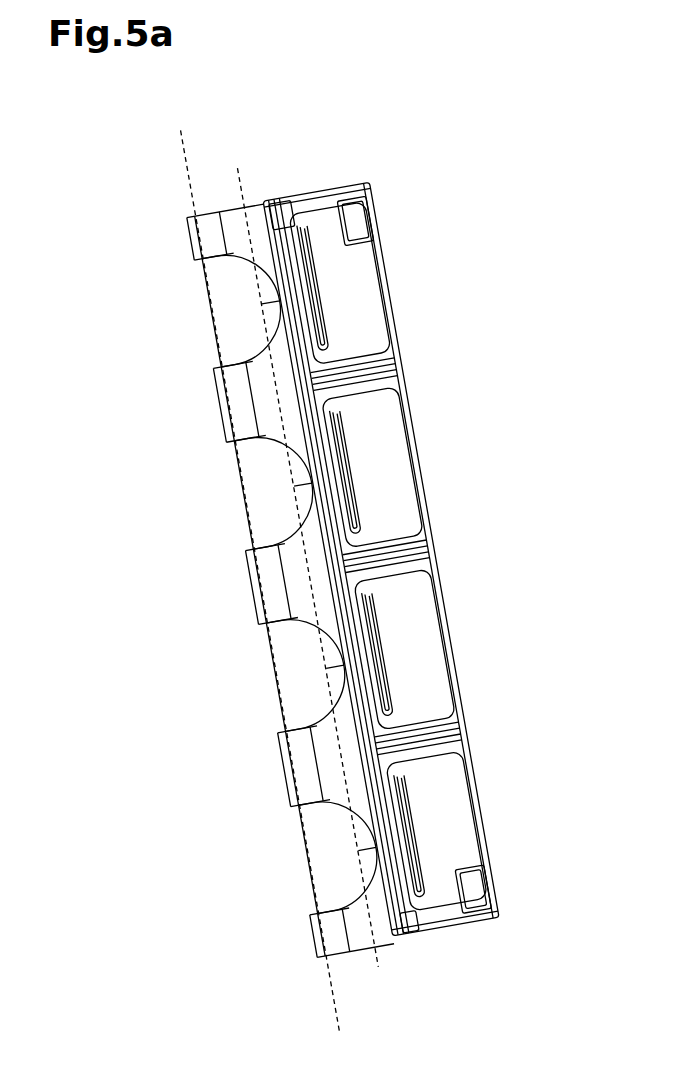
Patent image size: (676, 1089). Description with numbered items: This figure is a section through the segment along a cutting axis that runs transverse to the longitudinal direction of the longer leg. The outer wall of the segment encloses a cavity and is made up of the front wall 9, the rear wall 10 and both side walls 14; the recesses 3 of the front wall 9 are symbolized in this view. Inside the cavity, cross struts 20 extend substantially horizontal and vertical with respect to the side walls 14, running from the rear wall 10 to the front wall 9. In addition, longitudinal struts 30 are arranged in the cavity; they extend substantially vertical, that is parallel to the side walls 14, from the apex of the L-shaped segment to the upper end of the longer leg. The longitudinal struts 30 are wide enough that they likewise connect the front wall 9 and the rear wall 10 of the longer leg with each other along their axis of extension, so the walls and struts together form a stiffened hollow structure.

The recesses 3 is at (247, 492).
The front wall 9 is at (246, 582).
The rear wall 10 is at (427, 491).
The side walls 14 is at (268, 200).
The cross struts 20 is at (347, 400).
The longitudinal struts 30 is at (393, 372).